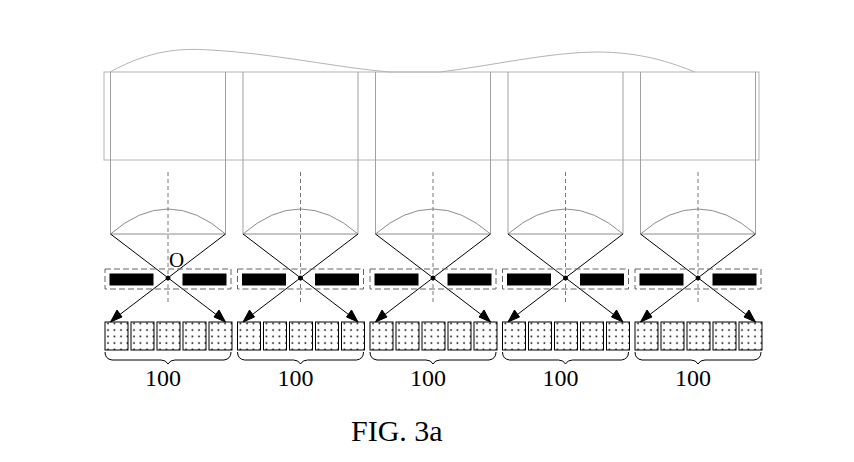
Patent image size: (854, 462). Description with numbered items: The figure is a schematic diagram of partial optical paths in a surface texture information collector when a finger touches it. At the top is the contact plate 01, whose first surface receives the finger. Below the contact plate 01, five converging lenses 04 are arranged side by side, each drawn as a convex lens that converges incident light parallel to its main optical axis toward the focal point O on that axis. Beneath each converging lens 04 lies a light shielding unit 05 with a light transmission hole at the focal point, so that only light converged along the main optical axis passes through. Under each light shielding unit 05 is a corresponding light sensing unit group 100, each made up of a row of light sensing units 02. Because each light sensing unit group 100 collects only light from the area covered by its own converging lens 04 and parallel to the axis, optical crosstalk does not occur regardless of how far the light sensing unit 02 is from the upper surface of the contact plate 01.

The contact plate 01 is at (158, 71).
The converging lens 04 is at (128, 222).
The light shielding unit 05 is at (106, 281).
The light sensing unit 02 is at (112, 333).
The light sensing unit group 100 is at (433, 371).